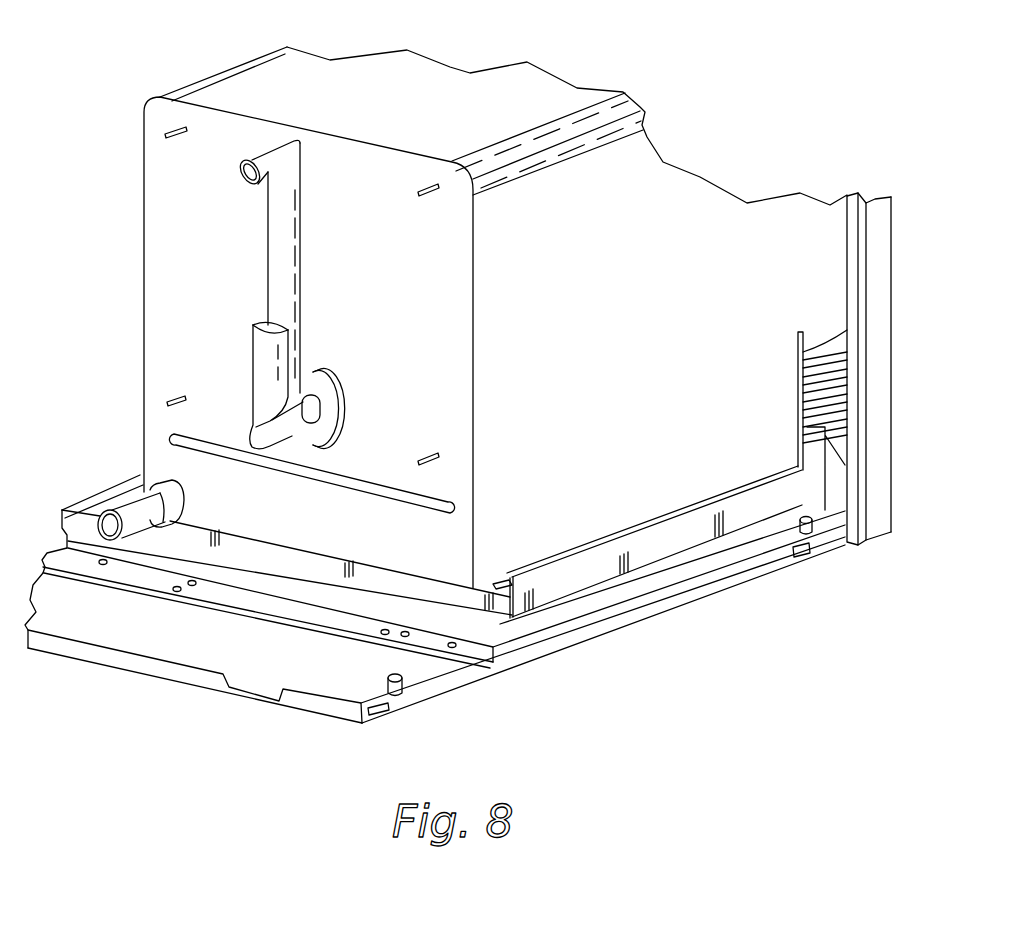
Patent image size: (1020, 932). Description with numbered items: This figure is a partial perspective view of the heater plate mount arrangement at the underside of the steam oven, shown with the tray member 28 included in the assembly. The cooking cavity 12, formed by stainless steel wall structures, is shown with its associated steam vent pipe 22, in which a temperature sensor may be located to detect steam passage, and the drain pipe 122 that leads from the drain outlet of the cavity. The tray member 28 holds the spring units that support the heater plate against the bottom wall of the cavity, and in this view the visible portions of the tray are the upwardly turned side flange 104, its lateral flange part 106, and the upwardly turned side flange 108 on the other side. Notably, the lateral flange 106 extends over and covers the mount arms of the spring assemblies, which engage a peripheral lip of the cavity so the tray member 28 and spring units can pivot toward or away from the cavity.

The cooking cavity 12 is at (635, 277).
The steam vent pipe 22 is at (290, 270).
The drain pipe 122 is at (182, 505).
The upwardly turned side flange 108 is at (410, 588).
The lateral flange part 106 is at (717, 495).
The upwardly turned side flange 104 is at (657, 545).
The tray member 28 is at (506, 617).